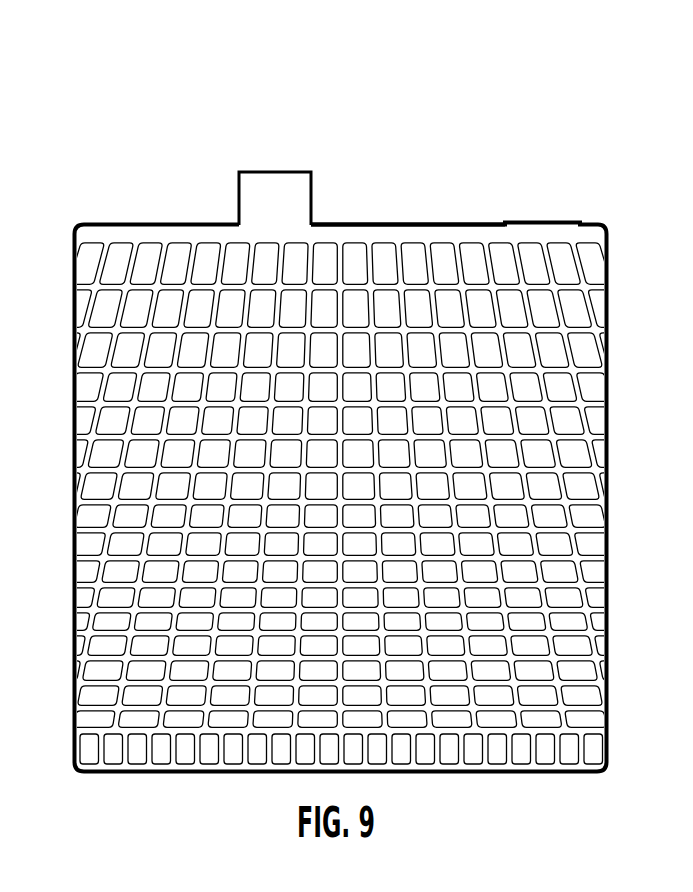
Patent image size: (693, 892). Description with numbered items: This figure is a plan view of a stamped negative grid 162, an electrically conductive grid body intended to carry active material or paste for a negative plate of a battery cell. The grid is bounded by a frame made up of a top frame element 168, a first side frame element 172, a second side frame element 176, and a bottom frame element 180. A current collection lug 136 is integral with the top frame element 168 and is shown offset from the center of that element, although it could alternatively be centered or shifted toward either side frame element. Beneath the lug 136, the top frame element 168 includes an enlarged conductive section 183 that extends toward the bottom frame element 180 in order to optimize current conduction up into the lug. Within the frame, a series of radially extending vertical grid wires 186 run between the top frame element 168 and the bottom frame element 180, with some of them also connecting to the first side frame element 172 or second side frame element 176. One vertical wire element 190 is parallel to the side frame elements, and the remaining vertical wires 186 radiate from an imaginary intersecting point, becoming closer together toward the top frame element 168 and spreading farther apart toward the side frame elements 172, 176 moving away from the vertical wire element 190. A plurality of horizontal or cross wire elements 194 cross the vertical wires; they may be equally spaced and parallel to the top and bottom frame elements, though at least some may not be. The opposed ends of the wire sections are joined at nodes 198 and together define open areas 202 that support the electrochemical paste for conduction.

The negative grid 162 is at (520, 128).
The current collection lug 136 is at (300, 190).
The top frame element 168 is at (535, 221).
The first side frame element 172 is at (64, 322).
The second side frame element 176 is at (607, 430).
The bottom frame element 180 is at (515, 772).
The enlarged conductive section 183 is at (312, 232).
The vertical grid wire 186 is at (463, 549).
The vertical wire element parallel to side frame elements 190 is at (350, 672).
The horizontal wire element 194 is at (462, 684).
The node 198 is at (405, 363).
The open area 202 is at (205, 292).